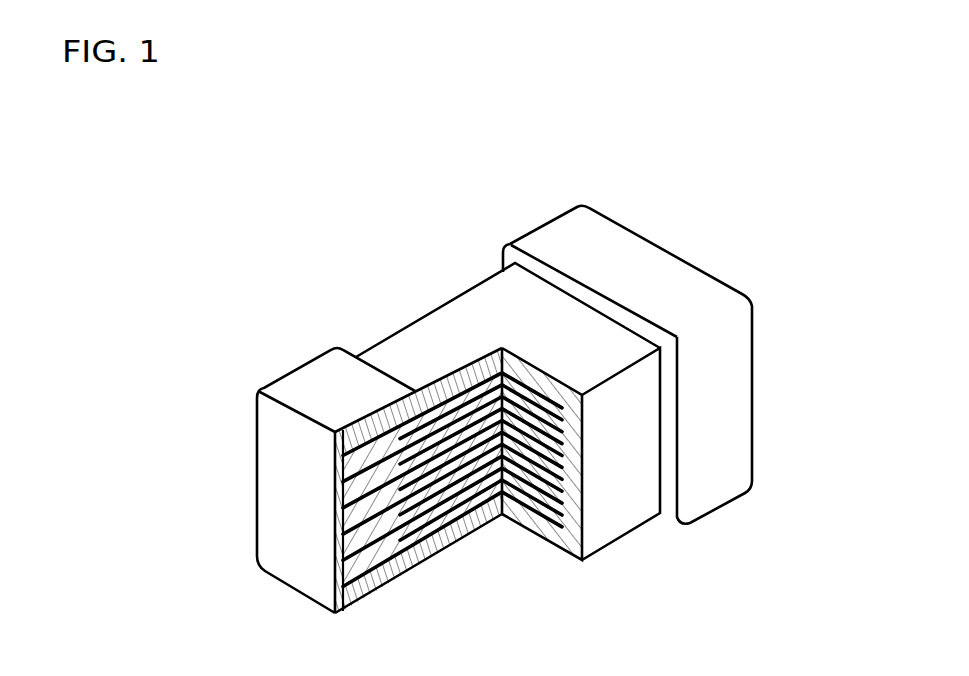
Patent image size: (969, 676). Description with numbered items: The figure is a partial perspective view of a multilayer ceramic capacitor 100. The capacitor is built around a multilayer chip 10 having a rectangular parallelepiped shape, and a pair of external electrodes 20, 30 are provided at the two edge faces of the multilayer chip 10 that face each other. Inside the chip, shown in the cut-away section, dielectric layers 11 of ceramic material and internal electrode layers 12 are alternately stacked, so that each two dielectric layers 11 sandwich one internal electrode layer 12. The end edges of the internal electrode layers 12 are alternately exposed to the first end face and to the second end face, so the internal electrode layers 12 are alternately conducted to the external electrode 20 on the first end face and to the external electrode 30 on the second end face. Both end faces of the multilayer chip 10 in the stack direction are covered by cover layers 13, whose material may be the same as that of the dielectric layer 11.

The multilayer ceramic capacitor 100 is at (836, 151).
The multilayer chip 10 is at (387, 335).
The dielectric layer 11 is at (436, 520).
The internal electrode layer 12 is at (413, 566).
The cover layer 13 is at (477, 298).
The external electrode 20 is at (302, 364).
The external electrode 30 is at (548, 238).